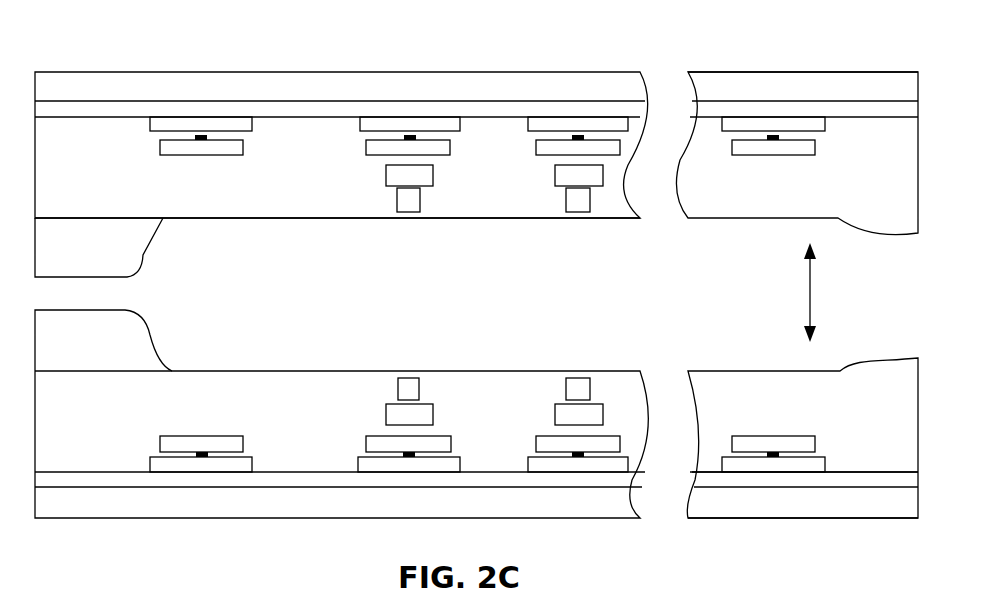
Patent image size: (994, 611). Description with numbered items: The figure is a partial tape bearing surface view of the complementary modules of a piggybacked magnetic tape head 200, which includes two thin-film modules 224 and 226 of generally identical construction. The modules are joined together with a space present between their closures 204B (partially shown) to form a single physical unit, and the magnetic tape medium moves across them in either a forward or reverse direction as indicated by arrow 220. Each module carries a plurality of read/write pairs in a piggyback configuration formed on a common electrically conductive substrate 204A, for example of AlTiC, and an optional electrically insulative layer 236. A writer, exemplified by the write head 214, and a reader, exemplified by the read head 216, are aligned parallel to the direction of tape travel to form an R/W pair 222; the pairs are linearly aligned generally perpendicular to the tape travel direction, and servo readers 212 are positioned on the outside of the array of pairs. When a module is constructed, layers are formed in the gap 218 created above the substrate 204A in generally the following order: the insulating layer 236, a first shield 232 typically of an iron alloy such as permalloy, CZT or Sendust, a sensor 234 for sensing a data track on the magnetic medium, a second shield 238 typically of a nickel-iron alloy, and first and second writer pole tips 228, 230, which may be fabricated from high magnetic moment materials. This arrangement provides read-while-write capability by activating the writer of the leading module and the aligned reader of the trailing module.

The magnetic tape head 200 is at (396, 48).
The common substrate 204A is at (170, 99).
The closure 204B is at (146, 257).
The gap 218 is at (252, 218).
The thin-film module 224 is at (833, 72).
The arrow 220 is at (812, 298).
The servo reader 212 is at (250, 415).
The R/W pair 222 is at (418, 352).
The write head 214 is at (492, 413).
The read head 216 is at (512, 463).
The second writer pole tip 230 is at (396, 390).
The first writer pole tip 228 is at (386, 415).
The second shield 238 is at (352, 442).
The sensor 234 is at (368, 440).
The first shield 232 is at (358, 462).
The insulating layer 236 is at (907, 465).
The thin-film module 226 is at (818, 518).